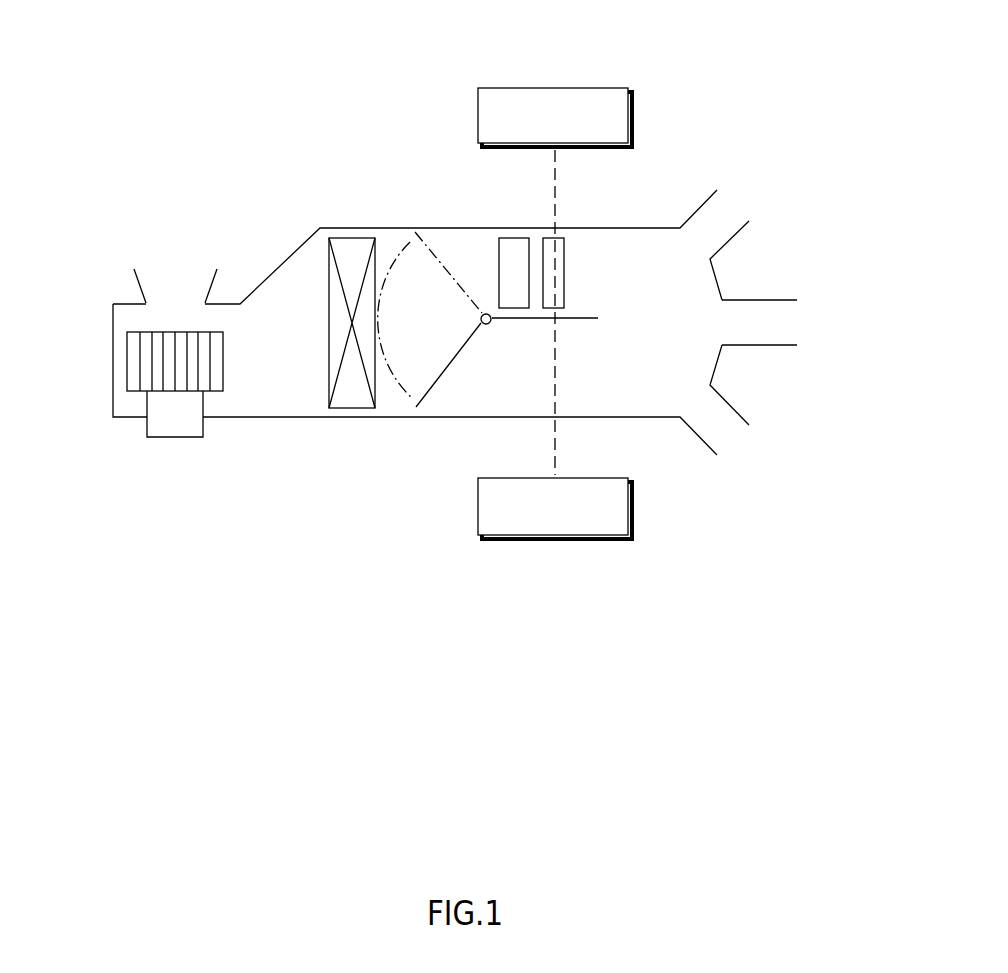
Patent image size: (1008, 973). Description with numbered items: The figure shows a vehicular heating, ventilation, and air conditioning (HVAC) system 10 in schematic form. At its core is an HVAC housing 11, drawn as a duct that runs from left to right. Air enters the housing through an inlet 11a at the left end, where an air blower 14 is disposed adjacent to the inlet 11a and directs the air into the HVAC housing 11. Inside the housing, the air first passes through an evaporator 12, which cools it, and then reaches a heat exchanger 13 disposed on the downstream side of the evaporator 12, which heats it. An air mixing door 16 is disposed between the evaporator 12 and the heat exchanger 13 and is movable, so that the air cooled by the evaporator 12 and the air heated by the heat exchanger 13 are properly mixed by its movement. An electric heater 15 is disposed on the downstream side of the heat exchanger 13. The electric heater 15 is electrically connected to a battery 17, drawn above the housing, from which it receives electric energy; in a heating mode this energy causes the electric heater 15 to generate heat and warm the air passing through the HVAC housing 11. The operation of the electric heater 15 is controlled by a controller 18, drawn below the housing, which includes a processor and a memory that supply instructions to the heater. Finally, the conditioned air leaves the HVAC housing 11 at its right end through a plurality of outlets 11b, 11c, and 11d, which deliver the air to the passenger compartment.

The vehicular heating, ventilation, and air conditioning (HVAC) system 10 is at (271, 78).
The HVAC housing 11 is at (400, 418).
The inlet 11a is at (176, 280).
The outlet 11b is at (726, 215).
The outlet 11c is at (773, 320).
The outlet 11d is at (726, 427).
The evaporator 12 is at (350, 250).
The heat exchanger 13 is at (512, 255).
The air blower 14 is at (140, 365).
The electric heater 15 is at (555, 263).
The air mixing door 16 is at (452, 367).
The battery 17 is at (553, 85).
The controller 18 is at (553, 538).